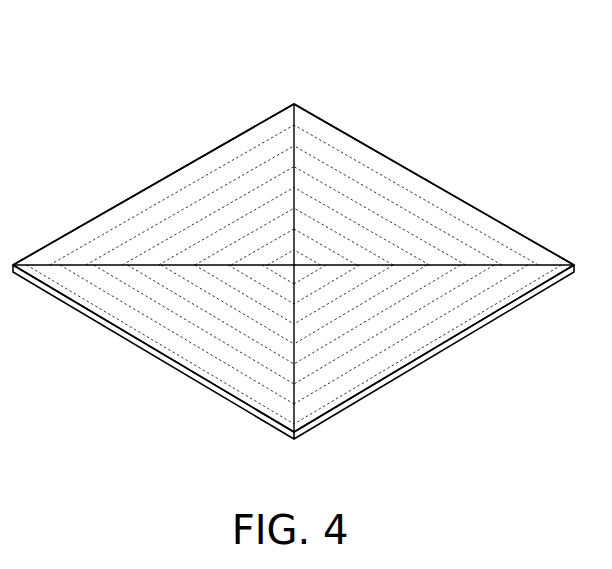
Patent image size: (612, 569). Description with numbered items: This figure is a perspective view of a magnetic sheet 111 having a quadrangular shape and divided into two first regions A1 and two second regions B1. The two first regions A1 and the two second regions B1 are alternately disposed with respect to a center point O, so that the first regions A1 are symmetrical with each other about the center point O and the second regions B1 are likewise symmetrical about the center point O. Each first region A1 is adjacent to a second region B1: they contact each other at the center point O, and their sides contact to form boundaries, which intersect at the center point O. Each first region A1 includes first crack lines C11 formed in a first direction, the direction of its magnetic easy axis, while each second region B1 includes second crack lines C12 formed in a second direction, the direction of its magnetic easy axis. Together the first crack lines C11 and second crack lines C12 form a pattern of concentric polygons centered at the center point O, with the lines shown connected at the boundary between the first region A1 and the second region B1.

The magnetic sheet 111 is at (318, 49).
The first region A1 is at (157, 174).
The second region B1 is at (430, 172).
The first crack lines C11 is at (133, 232).
The second crack lines C12 is at (454, 232).
The center point O is at (303, 256).